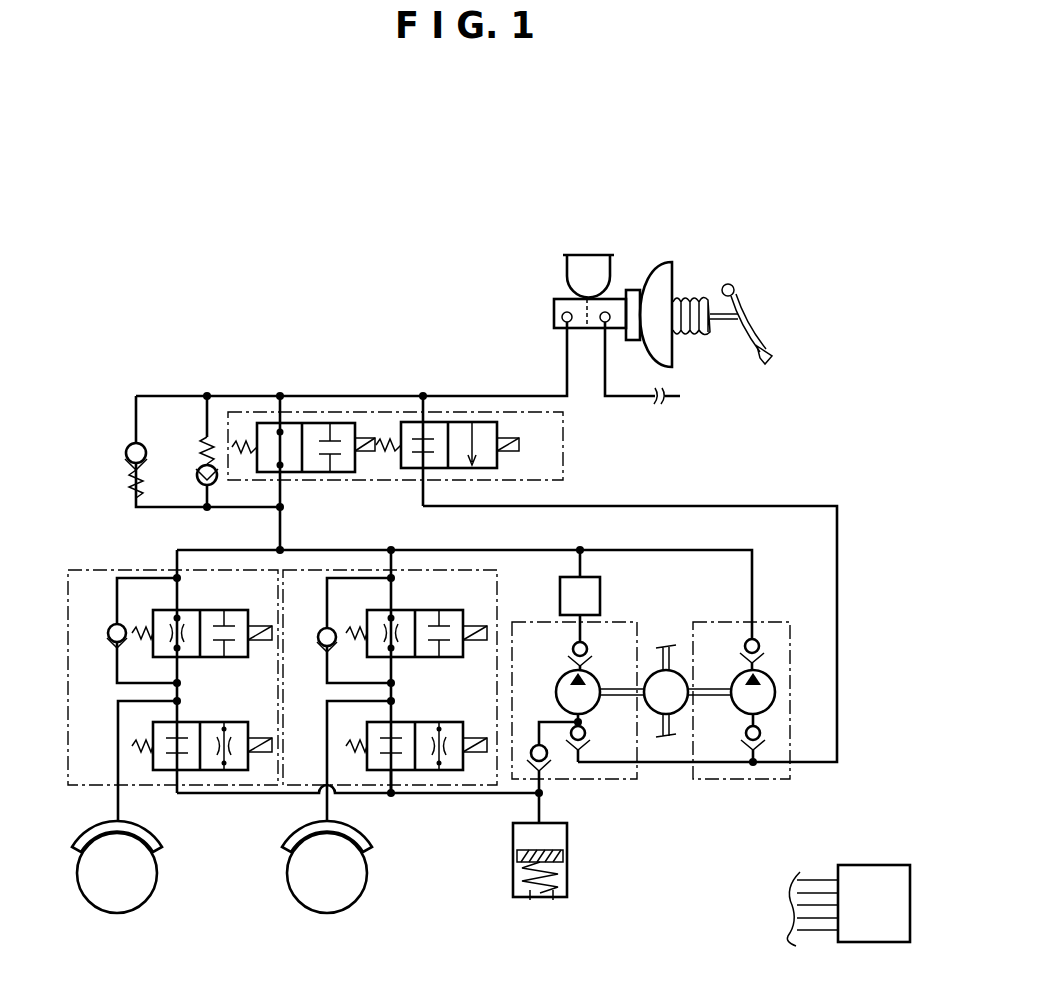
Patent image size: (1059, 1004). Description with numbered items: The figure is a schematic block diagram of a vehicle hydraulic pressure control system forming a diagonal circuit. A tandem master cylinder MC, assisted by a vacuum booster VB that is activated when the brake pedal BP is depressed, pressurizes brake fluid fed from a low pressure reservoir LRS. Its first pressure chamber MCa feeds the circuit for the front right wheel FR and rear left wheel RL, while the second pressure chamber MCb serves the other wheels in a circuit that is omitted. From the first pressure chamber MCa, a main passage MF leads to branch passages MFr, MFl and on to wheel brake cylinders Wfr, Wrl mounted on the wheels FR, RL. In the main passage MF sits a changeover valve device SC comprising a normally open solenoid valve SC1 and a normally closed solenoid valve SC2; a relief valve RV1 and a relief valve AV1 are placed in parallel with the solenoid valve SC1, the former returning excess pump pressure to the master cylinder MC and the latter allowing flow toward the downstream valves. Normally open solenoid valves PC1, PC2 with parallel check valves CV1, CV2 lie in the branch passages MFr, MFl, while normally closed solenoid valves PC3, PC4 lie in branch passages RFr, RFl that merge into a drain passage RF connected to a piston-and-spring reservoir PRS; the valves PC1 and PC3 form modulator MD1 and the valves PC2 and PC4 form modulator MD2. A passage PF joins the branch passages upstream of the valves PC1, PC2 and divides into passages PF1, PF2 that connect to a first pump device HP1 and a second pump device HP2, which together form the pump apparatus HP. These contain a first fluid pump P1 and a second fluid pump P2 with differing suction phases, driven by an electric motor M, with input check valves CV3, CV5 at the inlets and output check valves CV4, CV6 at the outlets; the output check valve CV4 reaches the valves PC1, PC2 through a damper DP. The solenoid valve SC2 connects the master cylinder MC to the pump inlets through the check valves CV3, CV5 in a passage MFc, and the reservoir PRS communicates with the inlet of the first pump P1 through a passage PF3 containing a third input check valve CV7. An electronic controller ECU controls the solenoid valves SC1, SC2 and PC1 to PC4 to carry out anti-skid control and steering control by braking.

The low pressure reservoir LRS is at (570, 279).
The master cylinder MC is at (554, 312).
The first pressure chamber MCa is at (557, 322).
The second pressure chamber MCb is at (612, 330).
The vacuum booster VB is at (676, 344).
The brake pedal BP is at (743, 321).
The main passage MF is at (437, 396).
The relief valve AV1 is at (128, 462).
The relief valve RV1 is at (197, 458).
The changeover valve device SC is at (563, 450).
The solenoid valve SC1 is at (297, 472).
The solenoid valve SC2 is at (455, 468).
The passage MFc is at (665, 505).
The branch passage MFr is at (177, 557).
The branch passage MFl is at (391, 594).
The passage PF is at (542, 550).
The passage PF1 is at (585, 632).
The passage PF2 is at (716, 550).
The passage PF3 is at (556, 720).
The modulator MD1 is at (84, 568).
The modulator MD2 is at (497, 588).
The check valve CV1 is at (108, 630).
The check valve CV2 is at (318, 634).
The first input check valve CV3 is at (586, 735).
The first output check valve CV4 is at (572, 646).
The second input check valve CV5 is at (746, 740).
The second output check valve CV6 is at (745, 644).
The third input check valve CV7 is at (548, 760).
The solenoid valve PC1 is at (200, 610).
The solenoid valve PC2 is at (410, 657).
The solenoid valve PC3 is at (200, 722).
The solenoid valve PC4 is at (424, 706).
The damper DP is at (580, 596).
The pump apparatus HP is at (675, 803).
The first pump device HP1 is at (628, 780).
The second pump device HP2 is at (725, 780).
The first fluid pump P1 is at (600, 692).
The second fluid pump P2 is at (753, 716).
The electric motor M is at (687, 691).
The wheel brake cylinder Wfr is at (86, 842).
The wheel brake cylinder Wrl is at (303, 824).
The wheel FR is at (117, 873).
The wheel RL is at (327, 873).
The branch passage RFr is at (200, 795).
The branch passage RFl is at (391, 779).
The drain passage RF is at (440, 795).
The reservoir PRS is at (513, 868).
The electronic controller ECU is at (848, 905).